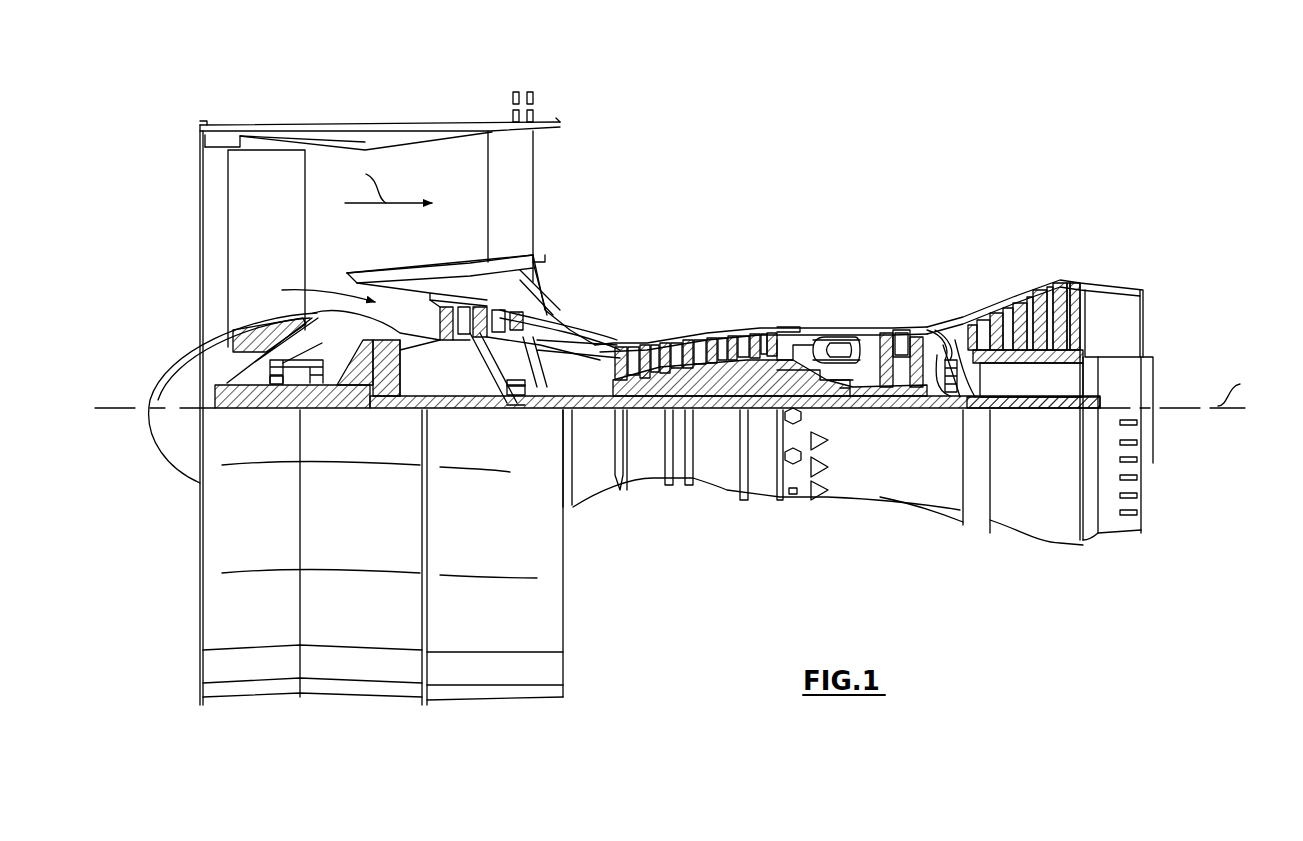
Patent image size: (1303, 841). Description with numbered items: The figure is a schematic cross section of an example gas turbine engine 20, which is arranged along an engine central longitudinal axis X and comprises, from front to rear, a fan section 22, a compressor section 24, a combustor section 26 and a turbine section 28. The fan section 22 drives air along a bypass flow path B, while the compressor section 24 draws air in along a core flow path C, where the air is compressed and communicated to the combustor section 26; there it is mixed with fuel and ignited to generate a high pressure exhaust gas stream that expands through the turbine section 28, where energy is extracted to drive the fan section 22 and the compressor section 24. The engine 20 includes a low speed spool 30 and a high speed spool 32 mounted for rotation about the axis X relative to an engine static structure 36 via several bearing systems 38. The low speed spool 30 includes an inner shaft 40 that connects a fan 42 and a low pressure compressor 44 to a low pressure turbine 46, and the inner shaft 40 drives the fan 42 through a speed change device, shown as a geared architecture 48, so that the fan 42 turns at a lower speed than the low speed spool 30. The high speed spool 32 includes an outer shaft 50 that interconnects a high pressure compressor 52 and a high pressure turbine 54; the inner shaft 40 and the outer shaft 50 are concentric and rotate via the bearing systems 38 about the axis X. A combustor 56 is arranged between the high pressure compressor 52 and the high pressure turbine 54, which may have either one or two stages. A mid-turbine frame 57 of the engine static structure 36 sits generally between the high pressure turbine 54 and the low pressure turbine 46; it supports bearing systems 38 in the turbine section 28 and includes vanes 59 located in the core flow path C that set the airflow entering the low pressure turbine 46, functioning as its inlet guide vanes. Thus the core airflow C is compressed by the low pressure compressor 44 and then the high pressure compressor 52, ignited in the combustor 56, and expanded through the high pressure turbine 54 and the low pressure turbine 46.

The gas turbine engine 20 is at (845, 172).
The fan section 22 is at (400, 103).
The compressor section 24 is at (420, 243).
The combustor section 26 is at (870, 243).
The turbine section 28 is at (1095, 243).
The low speed spool 30 is at (721, 420).
The high speed spool 32 is at (763, 345).
The engine static structure 36 is at (760, 498).
The bearing systems 38 is at (278, 400).
The inner shaft 40 is at (588, 412).
The fan 42 is at (284, 257).
The low pressure compressor section 44 is at (500, 312).
The low pressure turbine section 46 is at (1030, 300).
The geared architecture 48 is at (392, 386).
The outer shaft 50 is at (838, 400).
The high pressure compressor section 52 is at (695, 345).
The high pressure turbine section 54 is at (905, 337).
The combustor 56 is at (835, 350).
The mid-turbine frame 57 is at (940, 312).
The vanes 59 is at (990, 398).
The engine central longitudinal axis X is at (1241, 387).
The bypass flow path B is at (388, 184).
The core flow path C is at (317, 293).